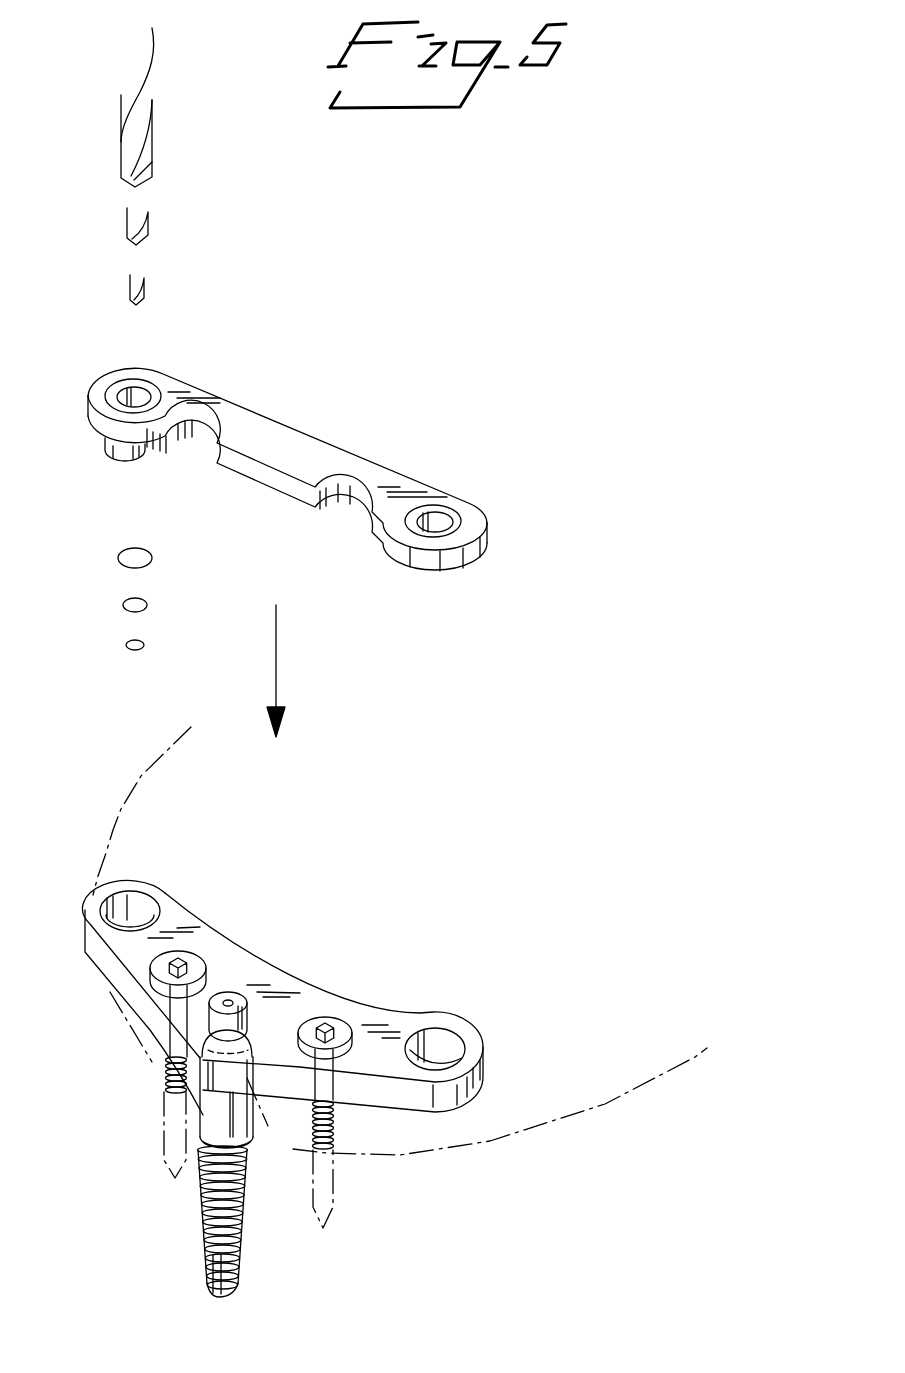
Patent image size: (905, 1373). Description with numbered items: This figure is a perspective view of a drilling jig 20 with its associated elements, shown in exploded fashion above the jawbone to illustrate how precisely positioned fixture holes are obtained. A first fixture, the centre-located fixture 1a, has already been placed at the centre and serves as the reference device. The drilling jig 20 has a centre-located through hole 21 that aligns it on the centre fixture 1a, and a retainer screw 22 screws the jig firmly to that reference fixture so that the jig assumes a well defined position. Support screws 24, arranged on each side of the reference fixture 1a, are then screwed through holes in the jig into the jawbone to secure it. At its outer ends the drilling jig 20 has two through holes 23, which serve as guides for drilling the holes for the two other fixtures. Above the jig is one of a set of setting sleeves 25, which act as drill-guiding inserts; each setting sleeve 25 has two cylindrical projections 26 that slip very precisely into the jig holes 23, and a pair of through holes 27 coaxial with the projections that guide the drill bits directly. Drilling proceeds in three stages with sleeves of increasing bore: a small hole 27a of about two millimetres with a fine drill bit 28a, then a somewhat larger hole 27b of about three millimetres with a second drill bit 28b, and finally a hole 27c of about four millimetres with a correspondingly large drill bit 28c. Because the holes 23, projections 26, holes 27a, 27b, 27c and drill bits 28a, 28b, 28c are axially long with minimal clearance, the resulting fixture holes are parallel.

The centre-located fixture 1a is at (188, 1210).
The drilling jig 20 is at (127, 957).
The centre-located through hole 21 is at (241, 1131).
The retainer screw 22 is at (243, 1007).
The through hole 23 is at (118, 907).
The support screw 24 is at (185, 1035).
The setting sleeve 25 is at (263, 418).
The cylindrical projection 26 is at (117, 447).
The through hole 27 is at (133, 393).
The small hole 27a is at (127, 643).
The hole of somewhat larger diameter 27b is at (123, 602).
The hole 27c is at (120, 552).
The fine drill bit 28a is at (142, 282).
The second drill bit 28b is at (147, 217).
The large drill bit 28c is at (142, 138).